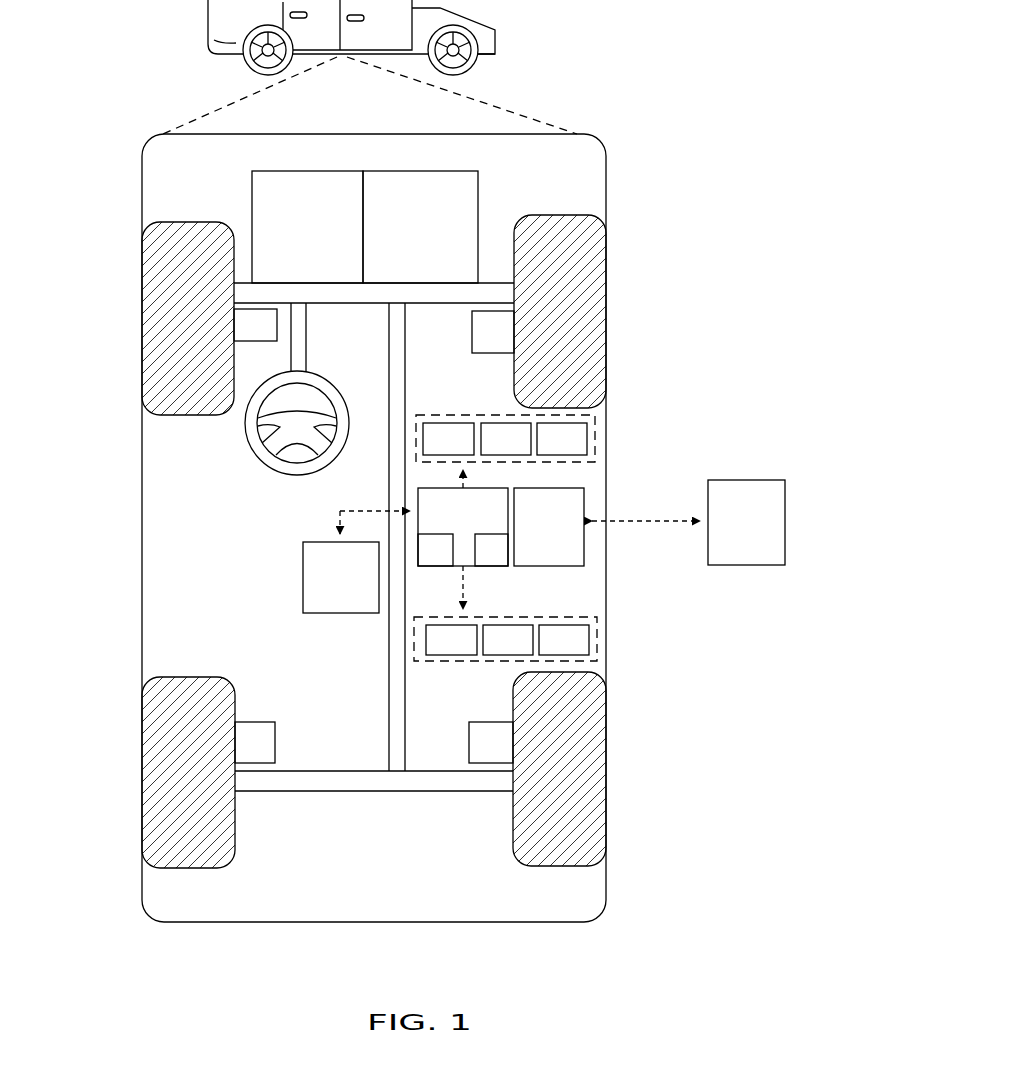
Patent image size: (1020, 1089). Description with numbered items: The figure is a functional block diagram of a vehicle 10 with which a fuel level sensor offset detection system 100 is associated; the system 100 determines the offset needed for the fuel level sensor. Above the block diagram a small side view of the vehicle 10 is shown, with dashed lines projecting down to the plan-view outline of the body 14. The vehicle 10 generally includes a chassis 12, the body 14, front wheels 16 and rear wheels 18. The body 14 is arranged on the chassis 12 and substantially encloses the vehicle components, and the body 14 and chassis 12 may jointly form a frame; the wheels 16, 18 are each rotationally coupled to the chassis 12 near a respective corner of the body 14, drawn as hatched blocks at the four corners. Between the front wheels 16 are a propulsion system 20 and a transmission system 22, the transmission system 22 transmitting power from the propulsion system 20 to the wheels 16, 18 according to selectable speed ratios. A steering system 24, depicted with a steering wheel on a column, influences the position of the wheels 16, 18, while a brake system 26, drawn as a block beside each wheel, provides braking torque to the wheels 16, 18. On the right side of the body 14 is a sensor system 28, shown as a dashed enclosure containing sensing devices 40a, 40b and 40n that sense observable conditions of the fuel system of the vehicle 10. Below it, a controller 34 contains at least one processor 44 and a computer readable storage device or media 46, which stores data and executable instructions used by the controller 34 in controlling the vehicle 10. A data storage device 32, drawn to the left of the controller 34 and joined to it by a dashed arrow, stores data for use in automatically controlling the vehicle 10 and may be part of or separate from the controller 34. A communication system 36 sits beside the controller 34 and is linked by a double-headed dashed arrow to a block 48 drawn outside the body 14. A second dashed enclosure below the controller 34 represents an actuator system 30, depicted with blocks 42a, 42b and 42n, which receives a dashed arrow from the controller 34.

The vehicle 10 is at (237, 43).
The fuel level sensor offset detection system 100 is at (700, 209).
The chassis 12 is at (389, 717).
The body 14 is at (142, 586).
The front wheels 16 is at (192, 407).
The rear wheels 18 is at (190, 850).
The propulsion system 20 is at (265, 210).
The transmission system 22 is at (468, 206).
The steering system 24 is at (318, 316).
The brake system 26 is at (258, 323).
The sensor system 28 is at (416, 440).
The actuator system 30 is at (434, 663).
The data storage device 32 is at (333, 613).
The controller 34 is at (422, 495).
The communication system 36 is at (551, 548).
The sensing device 40a is at (460, 423).
The sensing device 40b is at (498, 423).
The sensing device 40n is at (587, 435).
The actuator device 42a is at (456, 655).
The actuator device 42b is at (533, 640).
The actuator device 42n is at (589, 636).
The processor 44 is at (424, 545).
The computer readable storage device or media 46 is at (498, 548).
The remote system 48 is at (756, 565).